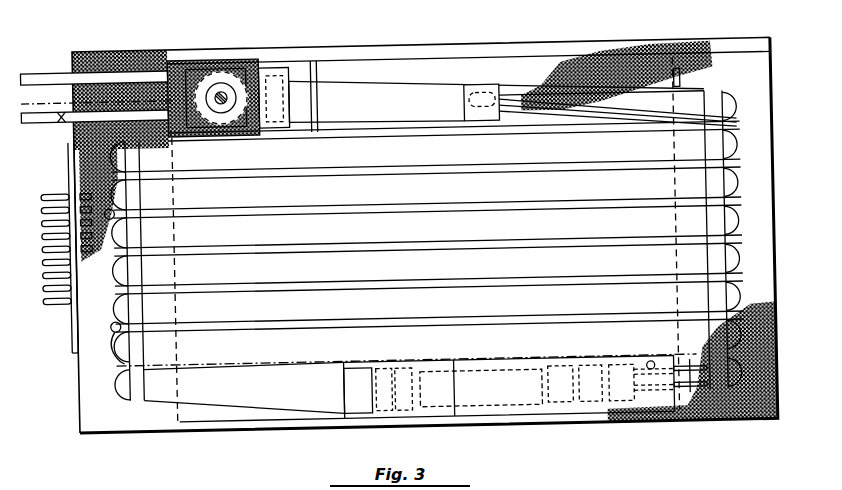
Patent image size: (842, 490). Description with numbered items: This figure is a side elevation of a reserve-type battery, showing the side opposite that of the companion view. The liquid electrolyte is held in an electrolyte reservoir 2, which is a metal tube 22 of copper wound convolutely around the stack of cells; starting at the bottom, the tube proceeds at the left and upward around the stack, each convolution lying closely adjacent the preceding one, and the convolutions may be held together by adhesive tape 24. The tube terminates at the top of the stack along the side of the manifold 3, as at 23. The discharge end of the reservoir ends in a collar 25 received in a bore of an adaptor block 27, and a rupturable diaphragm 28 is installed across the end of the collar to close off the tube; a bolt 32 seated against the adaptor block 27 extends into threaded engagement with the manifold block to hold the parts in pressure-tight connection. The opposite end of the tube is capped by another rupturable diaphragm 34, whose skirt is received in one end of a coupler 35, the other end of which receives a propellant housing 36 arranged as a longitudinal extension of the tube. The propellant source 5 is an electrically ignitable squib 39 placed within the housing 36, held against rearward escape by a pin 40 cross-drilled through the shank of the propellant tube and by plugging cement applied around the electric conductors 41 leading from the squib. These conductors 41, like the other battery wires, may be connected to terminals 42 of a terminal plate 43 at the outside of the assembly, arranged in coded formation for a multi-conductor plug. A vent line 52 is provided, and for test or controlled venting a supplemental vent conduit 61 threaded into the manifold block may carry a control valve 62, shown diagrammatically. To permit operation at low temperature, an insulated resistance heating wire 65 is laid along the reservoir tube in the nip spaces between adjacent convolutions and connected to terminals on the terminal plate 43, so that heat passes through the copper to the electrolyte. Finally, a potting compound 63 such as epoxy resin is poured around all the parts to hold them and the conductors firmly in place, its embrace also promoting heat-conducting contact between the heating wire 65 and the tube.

The electrolyte reservoir 2 is at (740, 225).
The manifold 3 is at (420, 72).
The propellant source 5 is at (20, 120).
The metal tube 22 is at (728, 274).
The tube termination 23 is at (318, 87).
The adhesive tape 24 is at (123, 396).
The collar 25 is at (277, 76).
The adaptor block 27 is at (197, 66).
The rupturable diaphragm 28 is at (243, 75).
The bolt 32 is at (224, 113).
The rupturable diaphragm 34 is at (376, 386).
The coupler 35 is at (438, 398).
The propellant housing 36 is at (540, 370).
The electrically ignitable squib 39 is at (543, 403).
The pin 40 is at (644, 373).
The electric conductors 41 is at (685, 418).
The terminals 42 is at (53, 301).
The terminal plate 43 is at (65, 340).
The vent line 52 is at (63, 73).
The vent conduit 61 is at (38, 123).
The control valve 62 is at (60, 127).
The potting compound 63 is at (730, 414).
The resistance heating wire 65 is at (342, 220).